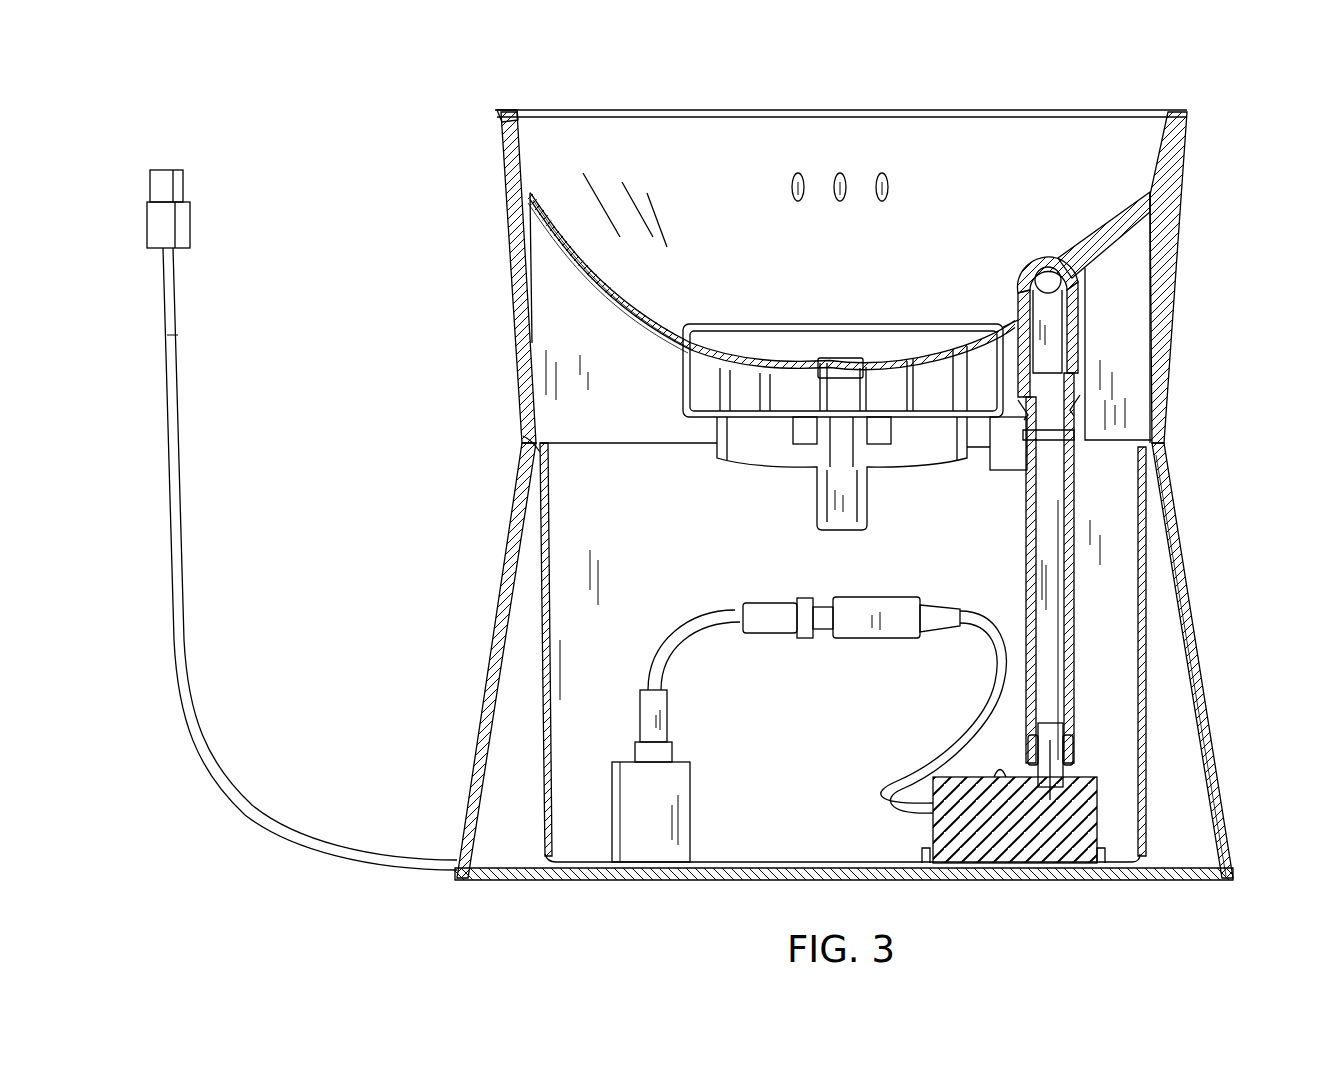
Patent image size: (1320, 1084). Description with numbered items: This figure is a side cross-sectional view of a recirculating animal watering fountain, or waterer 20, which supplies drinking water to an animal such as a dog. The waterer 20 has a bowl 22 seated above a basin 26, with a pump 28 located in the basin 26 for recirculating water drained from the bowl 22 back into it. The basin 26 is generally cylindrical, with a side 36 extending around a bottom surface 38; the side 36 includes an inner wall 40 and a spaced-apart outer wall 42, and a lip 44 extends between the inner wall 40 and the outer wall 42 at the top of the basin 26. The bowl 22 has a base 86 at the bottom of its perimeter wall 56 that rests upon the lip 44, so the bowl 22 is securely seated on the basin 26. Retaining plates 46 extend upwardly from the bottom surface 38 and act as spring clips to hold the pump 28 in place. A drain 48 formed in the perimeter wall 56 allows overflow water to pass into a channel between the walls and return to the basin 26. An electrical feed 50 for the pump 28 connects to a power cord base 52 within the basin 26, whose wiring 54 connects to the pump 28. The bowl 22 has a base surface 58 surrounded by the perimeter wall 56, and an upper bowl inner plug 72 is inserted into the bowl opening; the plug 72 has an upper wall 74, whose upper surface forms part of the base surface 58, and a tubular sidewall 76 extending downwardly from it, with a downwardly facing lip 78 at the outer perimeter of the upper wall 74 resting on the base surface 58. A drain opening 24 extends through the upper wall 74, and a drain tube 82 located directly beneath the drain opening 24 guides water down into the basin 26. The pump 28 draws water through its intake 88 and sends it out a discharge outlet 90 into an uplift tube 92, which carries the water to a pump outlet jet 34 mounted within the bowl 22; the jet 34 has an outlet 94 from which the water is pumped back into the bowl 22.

The waterer 20 is at (328, 318).
The bowl 22 is at (494, 157).
The drain opening 24 is at (828, 357).
The basin 26 is at (496, 617).
The pump 28 is at (1043, 853).
The pump outlet jet 34 is at (1055, 265).
The side 36 is at (512, 552).
The bottom surface 38 is at (687, 875).
The inner wall 40 is at (545, 790).
The outer wall 42 is at (493, 707).
The lip 44 is at (515, 435).
The retaining plates 46 is at (927, 850).
The drain 48 is at (797, 172).
The electrical feed 50 is at (217, 767).
The power cord base 52 is at (640, 833).
The wiring 54 is at (687, 627).
The perimeter wall 56 is at (501, 133).
The base surface 58 is at (597, 289).
The upper bowl inner plug 72 is at (597, 287).
The upper wall 74 is at (946, 345).
The tubular sidewall 76 is at (990, 387).
The lip 78 is at (1005, 327).
The drain tube 82 is at (897, 505).
The base 86 is at (532, 478).
The intake 88 is at (1003, 770).
The discharge outlet 90 is at (1073, 745).
The uplift tube 92 is at (1068, 608).
The outlet 94 is at (1073, 287).